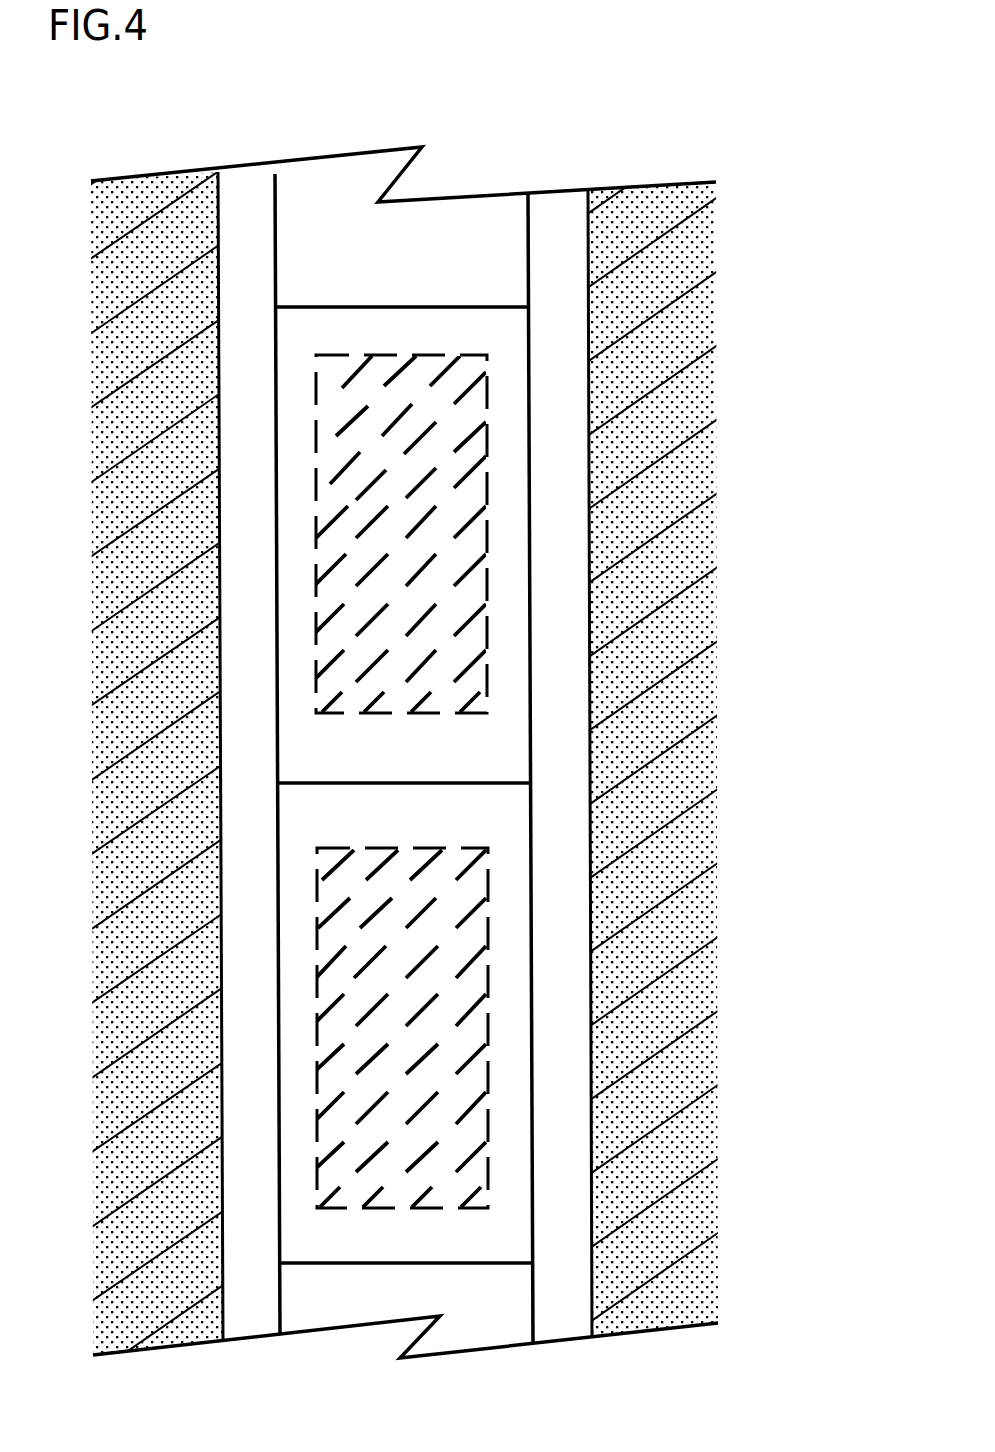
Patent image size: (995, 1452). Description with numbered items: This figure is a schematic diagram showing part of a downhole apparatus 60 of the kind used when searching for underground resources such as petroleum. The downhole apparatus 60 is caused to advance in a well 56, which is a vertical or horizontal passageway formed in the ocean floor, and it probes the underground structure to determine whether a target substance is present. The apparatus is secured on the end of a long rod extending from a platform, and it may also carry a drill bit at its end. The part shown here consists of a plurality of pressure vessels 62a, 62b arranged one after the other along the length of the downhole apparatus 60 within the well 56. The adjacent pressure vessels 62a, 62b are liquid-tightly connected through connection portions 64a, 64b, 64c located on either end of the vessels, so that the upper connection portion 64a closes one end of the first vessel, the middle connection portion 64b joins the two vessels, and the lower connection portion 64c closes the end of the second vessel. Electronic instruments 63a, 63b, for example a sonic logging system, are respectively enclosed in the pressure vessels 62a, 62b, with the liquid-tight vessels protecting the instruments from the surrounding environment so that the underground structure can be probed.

The well 56 is at (219, 898).
The downhole apparatus 60 is at (532, 470).
The pressure vessel 62a is at (512, 618).
The pressure vessel 62b is at (517, 918).
The electronic instrument 63a is at (470, 663).
The electronic instrument 63b is at (455, 1065).
The connection portion 64a is at (447, 307).
The connection portion 64b is at (472, 783).
The connection portion 64c is at (473, 1263).